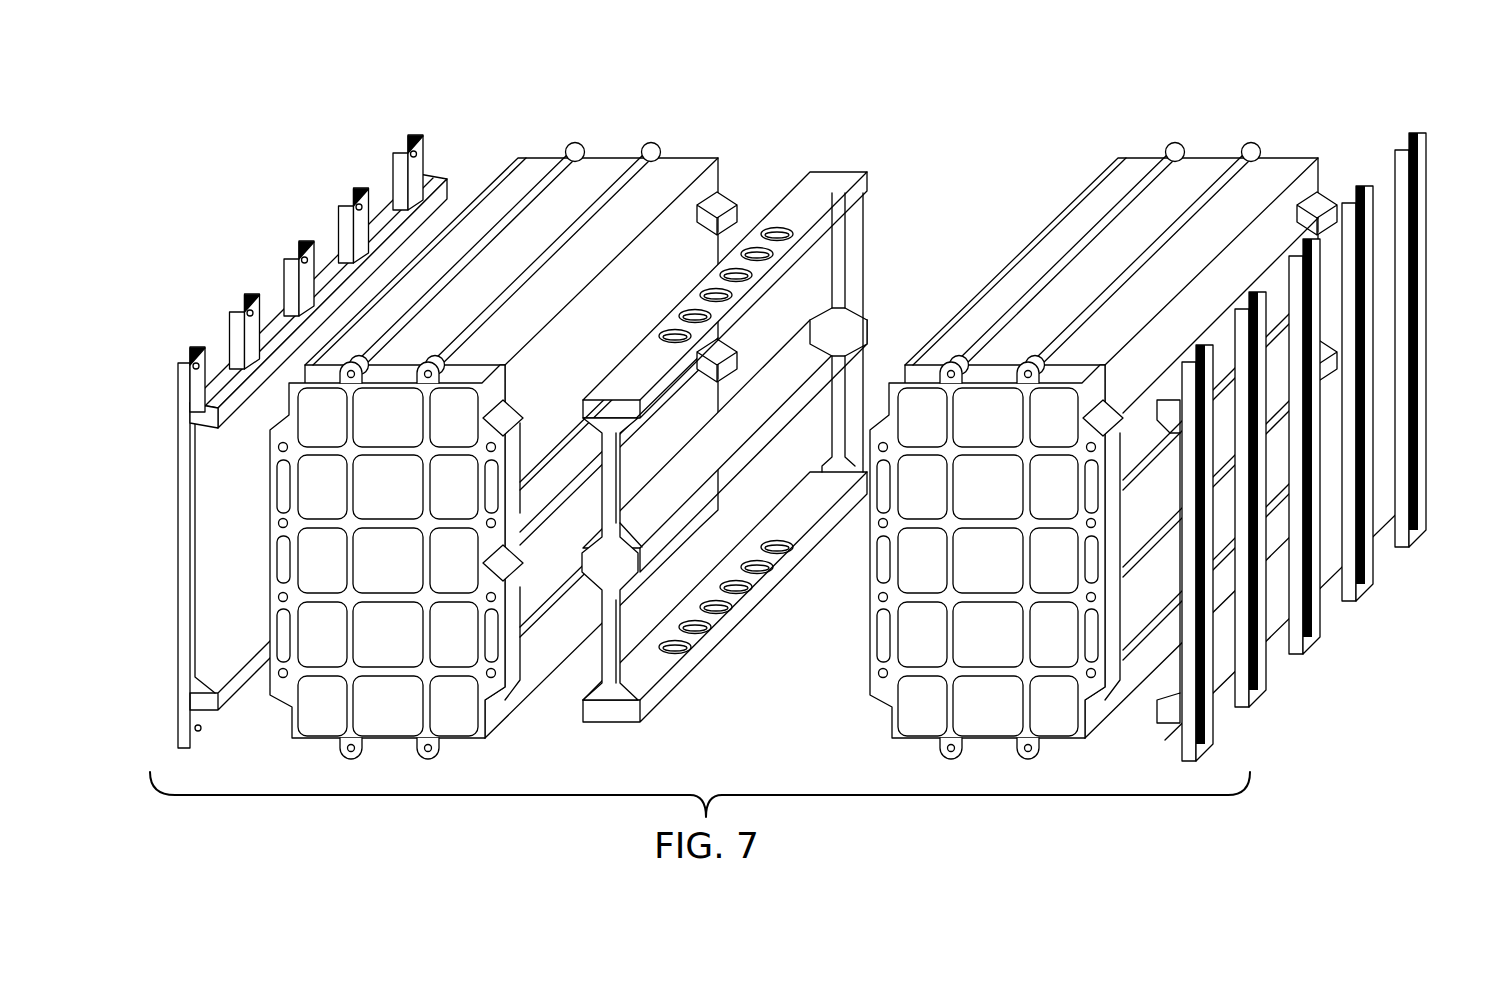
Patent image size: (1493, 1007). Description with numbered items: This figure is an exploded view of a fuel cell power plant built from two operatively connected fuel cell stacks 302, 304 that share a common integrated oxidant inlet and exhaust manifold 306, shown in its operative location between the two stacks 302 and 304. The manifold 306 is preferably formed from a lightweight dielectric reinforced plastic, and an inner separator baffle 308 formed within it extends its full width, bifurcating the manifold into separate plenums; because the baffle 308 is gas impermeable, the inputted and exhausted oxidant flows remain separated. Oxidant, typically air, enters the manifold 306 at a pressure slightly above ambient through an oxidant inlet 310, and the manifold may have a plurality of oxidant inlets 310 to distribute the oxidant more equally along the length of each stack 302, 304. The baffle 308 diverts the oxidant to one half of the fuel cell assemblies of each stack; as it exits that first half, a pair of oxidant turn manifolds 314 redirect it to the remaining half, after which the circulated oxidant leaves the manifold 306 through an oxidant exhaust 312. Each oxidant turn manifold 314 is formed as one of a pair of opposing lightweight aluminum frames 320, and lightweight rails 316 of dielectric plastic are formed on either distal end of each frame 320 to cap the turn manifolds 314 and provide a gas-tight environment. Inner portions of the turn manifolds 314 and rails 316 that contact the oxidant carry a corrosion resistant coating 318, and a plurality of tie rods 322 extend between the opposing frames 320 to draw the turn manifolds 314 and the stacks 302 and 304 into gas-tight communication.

The fuel cell stack 302 is at (627, 128).
The fuel cell stack 304 is at (1221, 128).
The integrated oxidant inlet and exhaust manifold 306 is at (890, 242).
The inner separator baffle 308 is at (780, 383).
The oxidant inlet 310 is at (777, 228).
The oxidant exhaust 312 is at (777, 540).
The oxidant turn manifold 314 is at (314, 204).
The lightweight rail 316 is at (297, 363).
The corrosion resistant coating 318 is at (212, 523).
The frame 320 is at (195, 577).
The tie rod 322 is at (1083, 350).